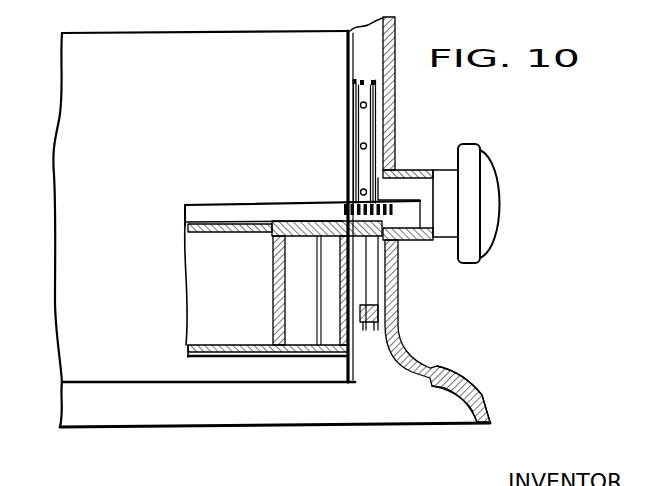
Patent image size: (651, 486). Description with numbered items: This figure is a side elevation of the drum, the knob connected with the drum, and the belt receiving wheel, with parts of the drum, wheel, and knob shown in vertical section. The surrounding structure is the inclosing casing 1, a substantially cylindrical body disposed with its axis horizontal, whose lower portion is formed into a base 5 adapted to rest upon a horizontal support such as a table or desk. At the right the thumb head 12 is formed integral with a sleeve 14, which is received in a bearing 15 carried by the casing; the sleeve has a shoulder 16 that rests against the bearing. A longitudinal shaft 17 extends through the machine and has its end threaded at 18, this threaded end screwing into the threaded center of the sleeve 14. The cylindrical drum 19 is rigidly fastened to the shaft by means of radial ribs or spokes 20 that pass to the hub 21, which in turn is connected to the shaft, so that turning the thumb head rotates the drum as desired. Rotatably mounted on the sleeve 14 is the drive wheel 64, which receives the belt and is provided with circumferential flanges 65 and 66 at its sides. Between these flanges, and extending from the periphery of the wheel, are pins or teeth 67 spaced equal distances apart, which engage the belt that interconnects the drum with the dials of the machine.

The inclosing casing 1 is at (402, 338).
The base 5 is at (450, 385).
The thumb head 12 is at (490, 190).
The sleeve 14 is at (445, 178).
The bearing 15 is at (402, 166).
The shoulder 16 is at (423, 241).
The longitudinal shaft 17 is at (280, 210).
The threaded end 18 is at (352, 200).
The drum 19 is at (271, 222).
The radial spokes 20 is at (273, 298).
The hub 21 is at (248, 237).
The drive wheel 64 is at (362, 118).
The circumferential flange 65 is at (350, 83).
The circumferential flange 66 is at (385, 78).
The pins or teeth 67 is at (354, 80).